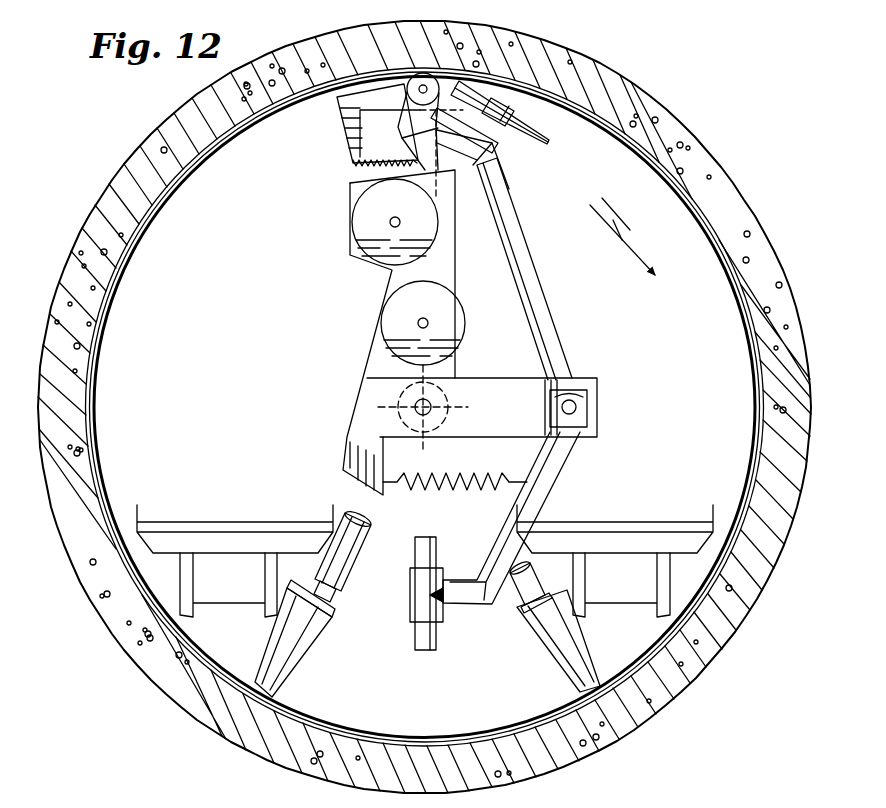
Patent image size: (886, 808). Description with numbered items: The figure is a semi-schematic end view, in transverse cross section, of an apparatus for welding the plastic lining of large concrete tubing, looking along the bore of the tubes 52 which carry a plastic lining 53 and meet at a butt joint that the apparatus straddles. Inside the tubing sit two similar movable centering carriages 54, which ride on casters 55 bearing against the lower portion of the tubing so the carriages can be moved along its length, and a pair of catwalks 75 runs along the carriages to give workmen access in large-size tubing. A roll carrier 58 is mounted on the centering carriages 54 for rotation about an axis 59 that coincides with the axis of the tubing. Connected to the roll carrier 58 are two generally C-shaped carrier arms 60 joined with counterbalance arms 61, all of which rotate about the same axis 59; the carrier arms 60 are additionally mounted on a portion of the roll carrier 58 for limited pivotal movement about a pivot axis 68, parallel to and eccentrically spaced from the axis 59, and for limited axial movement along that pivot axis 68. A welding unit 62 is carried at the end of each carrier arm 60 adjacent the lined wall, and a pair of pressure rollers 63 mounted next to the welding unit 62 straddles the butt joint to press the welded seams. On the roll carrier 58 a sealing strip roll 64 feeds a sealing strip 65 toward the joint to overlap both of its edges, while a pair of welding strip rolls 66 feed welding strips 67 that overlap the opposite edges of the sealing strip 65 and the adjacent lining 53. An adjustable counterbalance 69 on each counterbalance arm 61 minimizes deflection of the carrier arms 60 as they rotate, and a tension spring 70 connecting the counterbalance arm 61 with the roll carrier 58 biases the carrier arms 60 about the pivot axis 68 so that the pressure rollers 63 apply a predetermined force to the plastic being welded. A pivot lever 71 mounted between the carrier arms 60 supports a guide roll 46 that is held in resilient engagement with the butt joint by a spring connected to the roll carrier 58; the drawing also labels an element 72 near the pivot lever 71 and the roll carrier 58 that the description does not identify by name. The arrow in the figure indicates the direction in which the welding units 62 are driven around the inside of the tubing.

The guide roll 46 is at (488, 82).
The tubes 52 is at (693, 681).
The plastic lining 53 is at (184, 180).
The centering carriages 54 is at (355, 578).
The casters 55 is at (274, 681).
The roll carrier 58 is at (373, 303).
The axis 59 is at (400, 408).
The carrier arms 60 is at (562, 322).
The counterbalance arms 61 is at (568, 462).
The welding unit 62 is at (520, 112).
The pressure rollers 63 is at (423, 73).
The sealing strip roll 64 is at (466, 320).
The sealing strip 65 is at (458, 275).
The welding strip rolls 66 is at (352, 224).
The welding strips 67 is at (500, 167).
The pivot axis 68 is at (590, 408).
The adjustable counterbalance 69 is at (440, 643).
The tension spring 70 is at (447, 473).
The pivot lever 71 is at (355, 98).
The serrated jaw 72 is at (352, 161).
The catwalks 75 is at (222, 523).